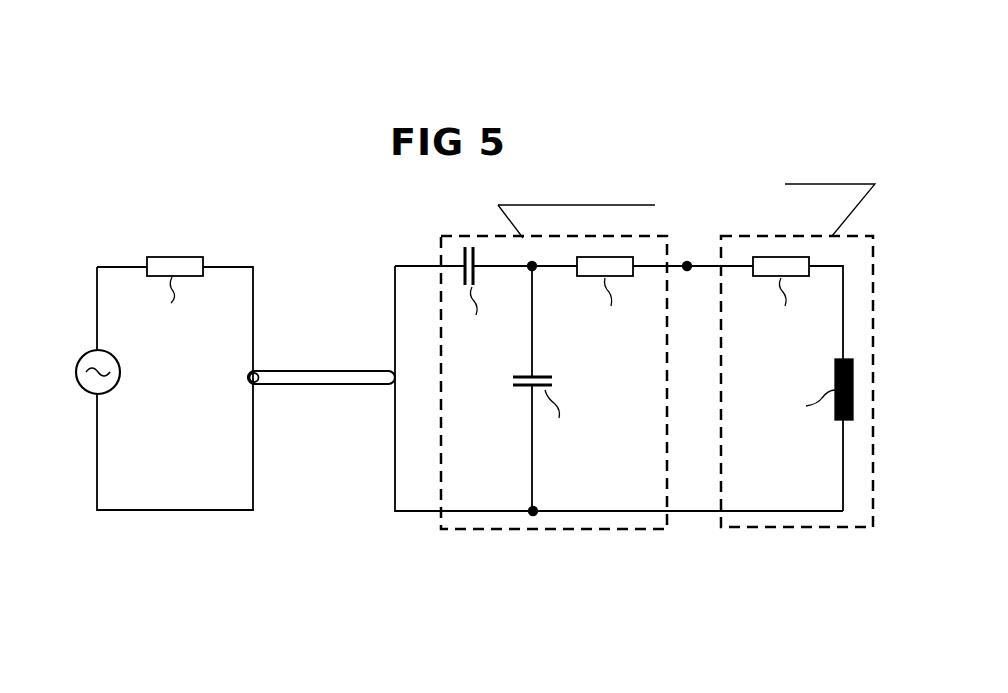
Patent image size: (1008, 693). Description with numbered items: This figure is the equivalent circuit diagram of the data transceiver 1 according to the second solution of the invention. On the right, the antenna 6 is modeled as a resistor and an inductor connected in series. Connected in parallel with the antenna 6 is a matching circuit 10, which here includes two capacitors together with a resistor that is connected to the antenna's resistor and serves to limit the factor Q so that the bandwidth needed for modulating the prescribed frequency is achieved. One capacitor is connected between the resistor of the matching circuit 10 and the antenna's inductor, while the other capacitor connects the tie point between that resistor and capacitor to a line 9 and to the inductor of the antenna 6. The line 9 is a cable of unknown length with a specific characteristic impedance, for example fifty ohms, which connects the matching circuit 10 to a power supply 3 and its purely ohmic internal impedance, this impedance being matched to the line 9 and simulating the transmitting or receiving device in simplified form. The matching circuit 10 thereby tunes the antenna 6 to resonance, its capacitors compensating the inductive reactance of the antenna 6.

The data transceiver 1 is at (92, 262).
The power supply 3 is at (114, 390).
The line 9 is at (326, 370).
The matching circuit 10 is at (487, 531).
The antenna 6 is at (794, 235).